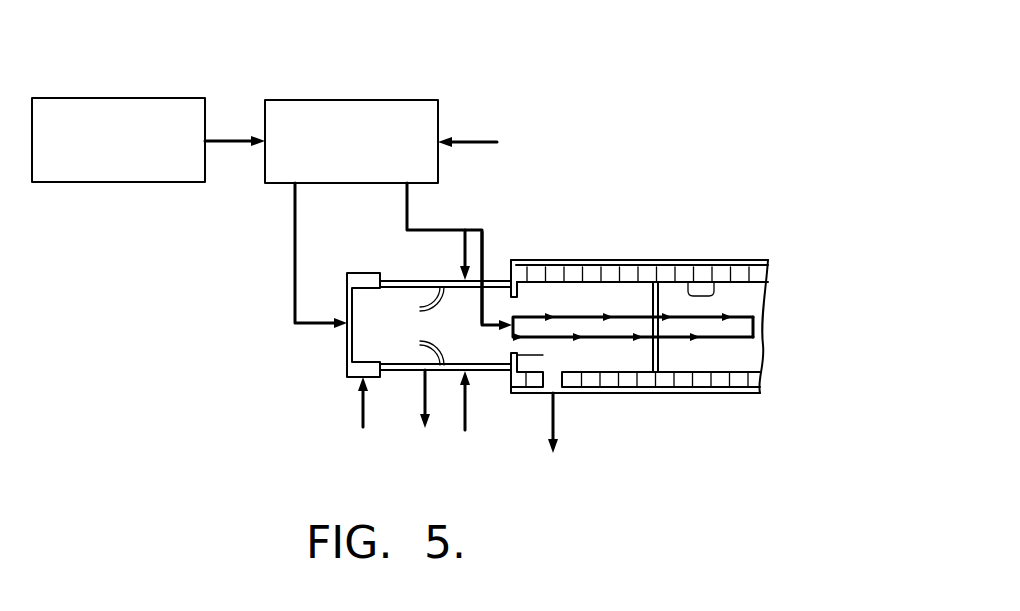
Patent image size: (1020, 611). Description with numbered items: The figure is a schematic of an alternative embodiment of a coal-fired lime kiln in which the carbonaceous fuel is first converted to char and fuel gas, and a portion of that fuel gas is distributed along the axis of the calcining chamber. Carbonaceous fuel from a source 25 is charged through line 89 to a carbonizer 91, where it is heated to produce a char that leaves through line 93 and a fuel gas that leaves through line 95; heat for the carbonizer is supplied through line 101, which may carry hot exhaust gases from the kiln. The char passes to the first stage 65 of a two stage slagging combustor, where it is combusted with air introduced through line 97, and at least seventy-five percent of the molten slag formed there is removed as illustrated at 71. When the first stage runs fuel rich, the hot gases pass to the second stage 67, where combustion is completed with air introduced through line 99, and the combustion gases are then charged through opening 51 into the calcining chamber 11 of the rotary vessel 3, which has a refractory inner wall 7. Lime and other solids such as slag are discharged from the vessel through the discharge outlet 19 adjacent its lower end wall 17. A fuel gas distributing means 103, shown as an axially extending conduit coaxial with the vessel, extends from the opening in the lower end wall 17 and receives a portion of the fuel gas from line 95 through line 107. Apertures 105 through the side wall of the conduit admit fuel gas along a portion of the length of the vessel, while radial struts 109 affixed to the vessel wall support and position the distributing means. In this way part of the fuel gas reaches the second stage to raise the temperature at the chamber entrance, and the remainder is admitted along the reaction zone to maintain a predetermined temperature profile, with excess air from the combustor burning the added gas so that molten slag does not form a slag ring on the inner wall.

The carbonaceous fuel source 25 is at (89, 98).
The fuel feed line 89 is at (228, 134).
The carbonizer 91 is at (268, 185).
The carbonizer heat supply line 101 is at (482, 140).
The char discharge line 93 is at (294, 240).
The fuel gas discharge line 95 is at (444, 232).
The fuel gas branch line 107 is at (483, 246).
The lower end wall 17 is at (503, 273).
The rotary vessel 3 is at (585, 260).
The apertures 105 is at (620, 305).
The refractory inner wall 7 is at (712, 283).
The calcining chamber 11 is at (758, 307).
The opening 51 is at (532, 351).
The fuel gas distributing means 103 is at (678, 342).
The radial struts 109 is at (647, 363).
The discharge outlet 19 is at (556, 412).
The first stage 65 is at (410, 372).
The second stage 67 is at (485, 373).
The first stage air line 97 is at (362, 413).
The slag removal 71 is at (421, 397).
The second stage air line 99 is at (459, 393).